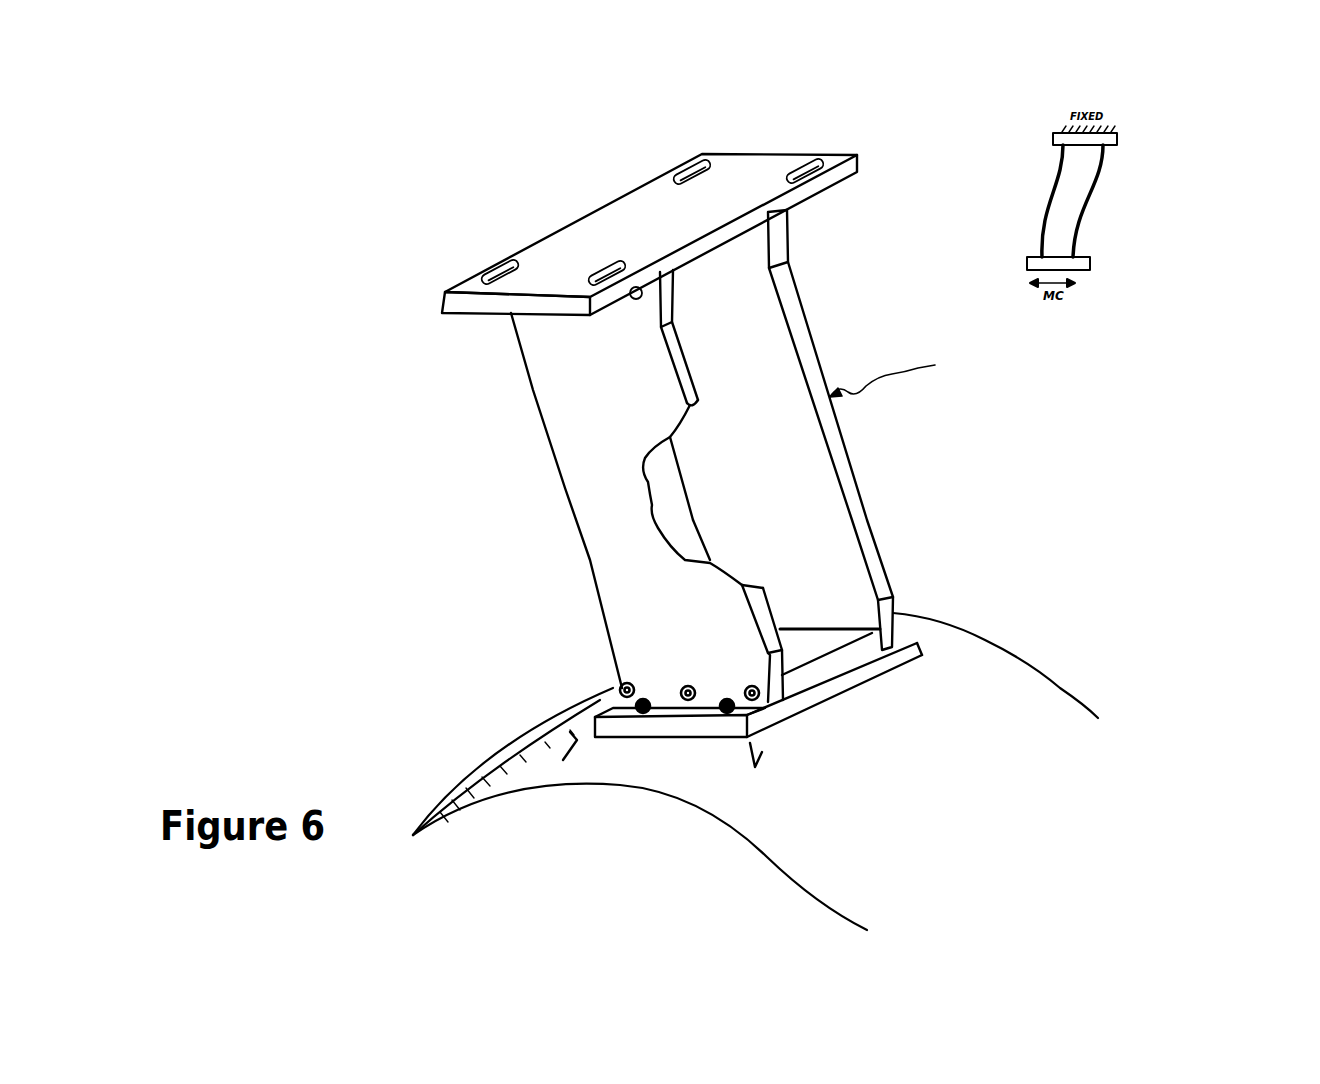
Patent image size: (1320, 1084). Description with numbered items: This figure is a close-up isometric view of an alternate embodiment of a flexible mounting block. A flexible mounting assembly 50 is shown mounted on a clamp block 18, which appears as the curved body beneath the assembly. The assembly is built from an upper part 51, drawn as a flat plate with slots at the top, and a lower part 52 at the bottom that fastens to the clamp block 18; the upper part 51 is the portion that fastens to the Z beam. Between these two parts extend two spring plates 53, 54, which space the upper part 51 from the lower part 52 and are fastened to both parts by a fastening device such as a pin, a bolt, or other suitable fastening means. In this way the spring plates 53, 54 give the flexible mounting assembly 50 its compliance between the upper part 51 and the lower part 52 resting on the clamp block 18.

The flexible mounting assembly 50 is at (355, 242).
The upper part 51 is at (608, 232).
The lower part 52 is at (847, 662).
The spring plate 53 is at (567, 405).
The spring plate 54 is at (793, 488).
The clamp block 18 is at (1008, 715).